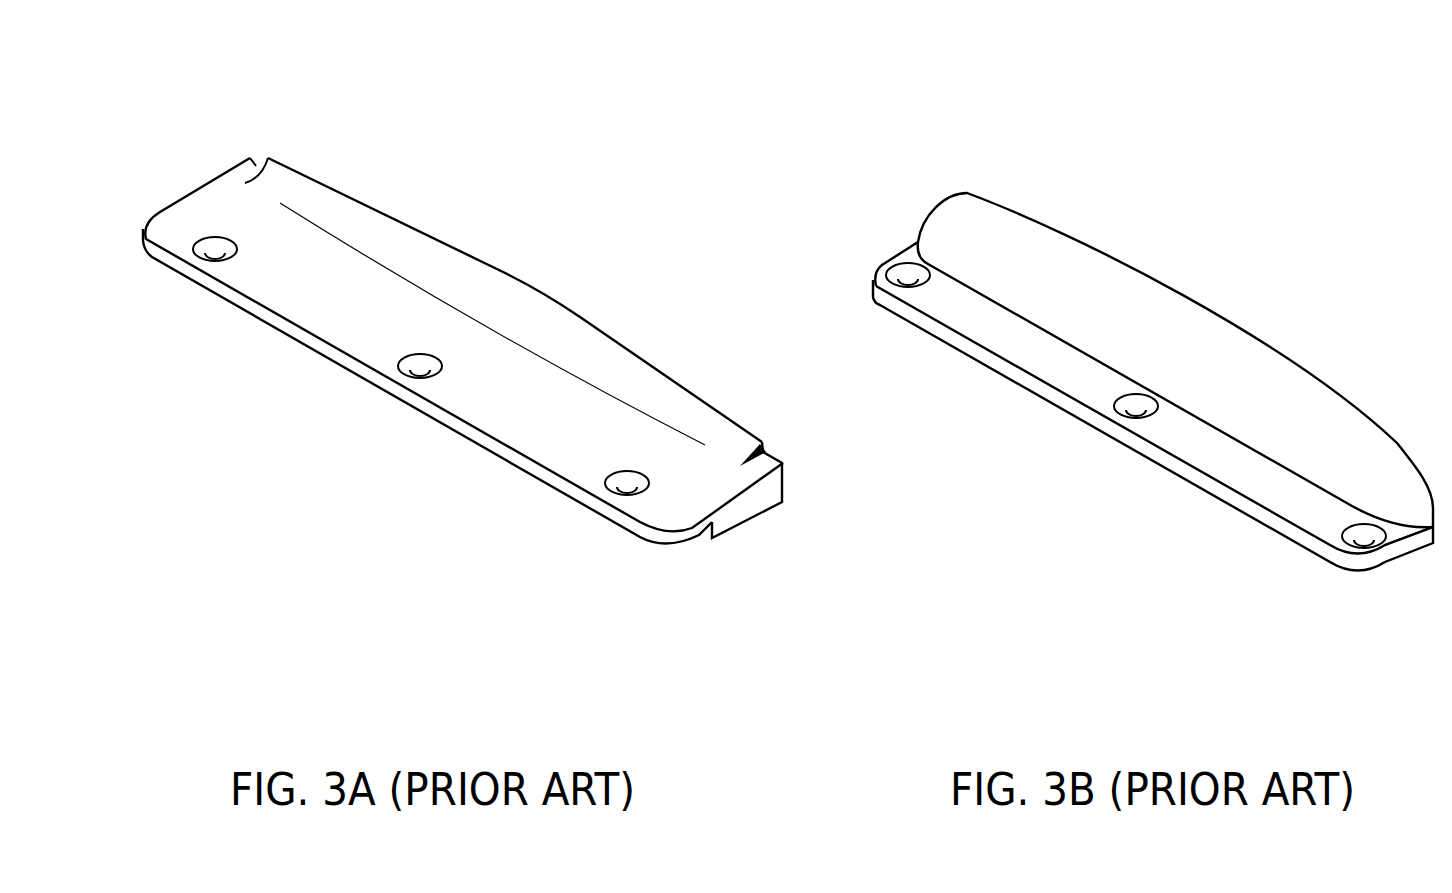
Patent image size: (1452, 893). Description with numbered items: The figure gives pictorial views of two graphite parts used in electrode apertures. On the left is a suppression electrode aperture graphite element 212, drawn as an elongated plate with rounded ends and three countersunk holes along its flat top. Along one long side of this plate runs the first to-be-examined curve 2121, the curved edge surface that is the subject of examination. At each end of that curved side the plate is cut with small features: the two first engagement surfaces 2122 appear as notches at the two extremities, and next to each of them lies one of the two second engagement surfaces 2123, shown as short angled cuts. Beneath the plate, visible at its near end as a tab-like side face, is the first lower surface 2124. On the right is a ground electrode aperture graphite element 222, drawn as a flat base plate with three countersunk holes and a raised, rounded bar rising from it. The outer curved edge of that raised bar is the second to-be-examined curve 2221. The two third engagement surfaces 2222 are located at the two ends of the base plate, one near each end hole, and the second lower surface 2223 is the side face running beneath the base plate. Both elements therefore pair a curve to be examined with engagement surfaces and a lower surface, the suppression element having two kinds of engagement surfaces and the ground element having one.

In FIG. 3A, the suppression electrode aperture graphite element 212 is at (424, 622).
In FIG. 3A, the first to-be-examined curve 2121 is at (465, 253).
In FIG. 3A, the first engagement surfaces 2122 is at (255, 157).
In FIG. 3A, the second engagement surfaces 2123 is at (266, 157).
In FIG. 3A, the first lower surface 2124 is at (750, 520).
In FIG. 3B, the ground electrode aperture graphite element 222 is at (1154, 624).
In FIG. 3B, the second to-be-examined curve 2221 is at (1202, 305).
In FIG. 3B, the third engagement surfaces 2222 is at (894, 253).
In FIG. 3B, the second lower surface 2223 is at (1106, 436).